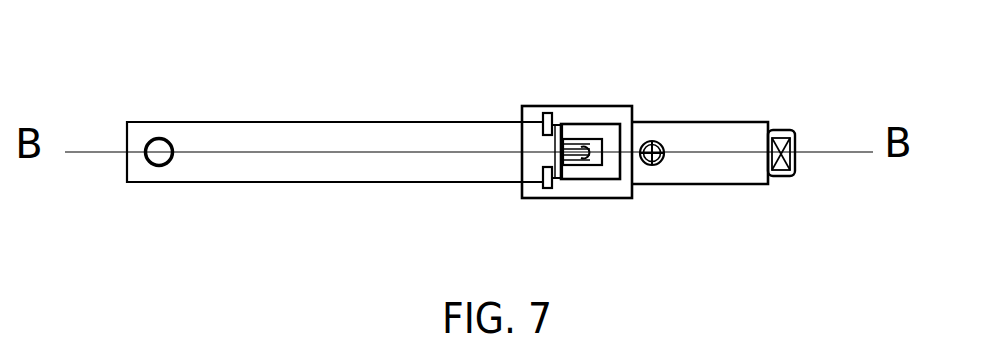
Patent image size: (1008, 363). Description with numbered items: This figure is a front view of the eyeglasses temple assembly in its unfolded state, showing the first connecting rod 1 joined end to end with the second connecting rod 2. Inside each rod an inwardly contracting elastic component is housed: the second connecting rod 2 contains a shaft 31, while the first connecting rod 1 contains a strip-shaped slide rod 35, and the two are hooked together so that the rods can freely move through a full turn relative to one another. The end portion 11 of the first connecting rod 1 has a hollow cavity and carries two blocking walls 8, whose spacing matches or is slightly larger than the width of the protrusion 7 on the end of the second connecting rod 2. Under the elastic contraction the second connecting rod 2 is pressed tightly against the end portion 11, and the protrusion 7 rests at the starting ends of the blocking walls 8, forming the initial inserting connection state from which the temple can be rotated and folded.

The first connecting rod 1 is at (688, 160).
The second connecting rod 2 is at (287, 160).
The protrusion 7 is at (556, 161).
The blocking walls 8 is at (571, 124).
The end portion 11 is at (617, 185).
The shaft 31 is at (567, 176).
The slide rod 35 is at (590, 134).